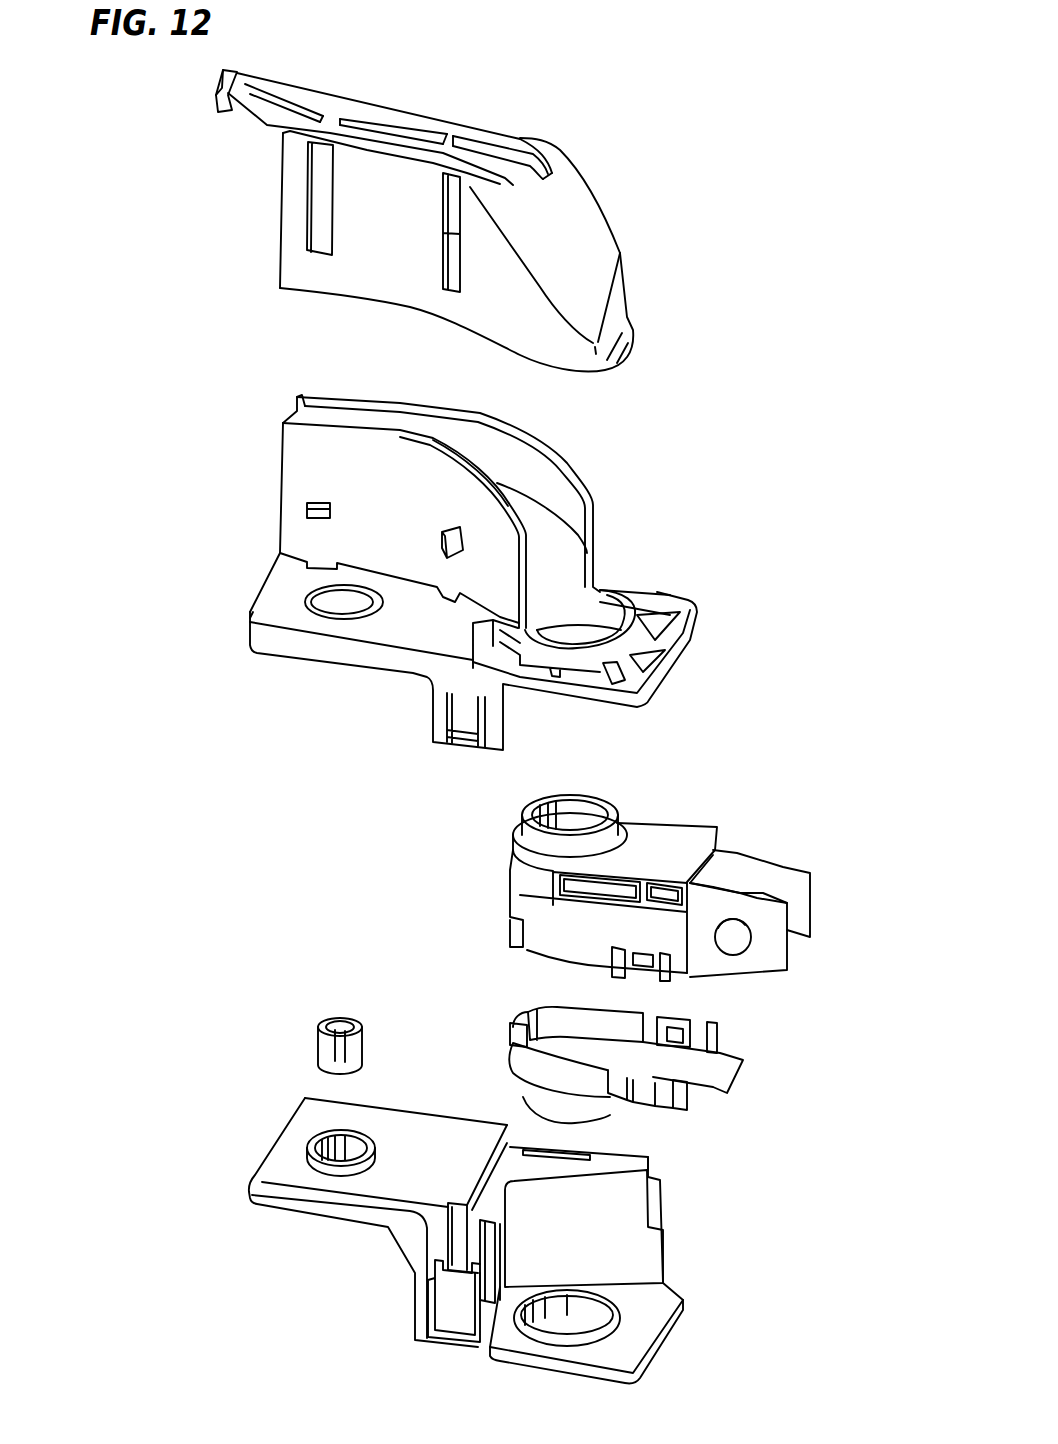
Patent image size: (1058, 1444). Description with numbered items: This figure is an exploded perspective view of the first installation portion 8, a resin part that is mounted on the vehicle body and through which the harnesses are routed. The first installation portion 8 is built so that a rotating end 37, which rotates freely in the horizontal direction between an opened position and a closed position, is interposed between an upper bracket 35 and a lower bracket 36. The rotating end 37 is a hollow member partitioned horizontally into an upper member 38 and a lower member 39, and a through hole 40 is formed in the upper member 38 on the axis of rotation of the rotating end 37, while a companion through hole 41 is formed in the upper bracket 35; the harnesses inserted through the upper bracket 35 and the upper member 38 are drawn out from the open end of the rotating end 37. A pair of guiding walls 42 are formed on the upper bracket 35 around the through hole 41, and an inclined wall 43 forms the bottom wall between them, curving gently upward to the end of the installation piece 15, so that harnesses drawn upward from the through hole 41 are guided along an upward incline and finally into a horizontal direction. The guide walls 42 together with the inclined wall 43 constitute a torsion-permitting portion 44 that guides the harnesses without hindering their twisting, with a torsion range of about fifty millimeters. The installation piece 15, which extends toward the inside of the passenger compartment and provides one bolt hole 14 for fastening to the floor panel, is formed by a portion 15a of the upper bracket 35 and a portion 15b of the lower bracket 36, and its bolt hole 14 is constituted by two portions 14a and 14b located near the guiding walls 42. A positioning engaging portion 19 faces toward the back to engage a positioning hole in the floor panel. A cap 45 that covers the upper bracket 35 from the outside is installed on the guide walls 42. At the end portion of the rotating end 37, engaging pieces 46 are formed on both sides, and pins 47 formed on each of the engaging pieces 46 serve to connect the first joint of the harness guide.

The first installation portion 8 is at (210, 544).
The bolt hole 14 is at (268, 698).
The bolt hole portion 14a is at (357, 610).
The bolt hole portion 14b is at (335, 1153).
The installation piece 15 is at (112, 672).
The portion of the upper bracket 15a is at (268, 612).
The portion of the lower bracket 15b is at (293, 1152).
The positioning engaging portion 19 is at (653, 1333).
The upper bracket 35 is at (673, 607).
The lower bracket 36 is at (663, 1190).
The rotating end 37 is at (478, 847).
The upper member 38 is at (702, 875).
The lower member 39 is at (723, 1037).
The through hole 40 is at (583, 807).
The through hole 41 is at (600, 610).
The guiding walls 42 is at (537, 458).
The inclined wall 43 is at (540, 527).
The torsion-permitting portion 44 is at (487, 457).
The cap 45 is at (577, 207).
The engaging pieces 46 is at (803, 890).
The pins 47 is at (733, 947).